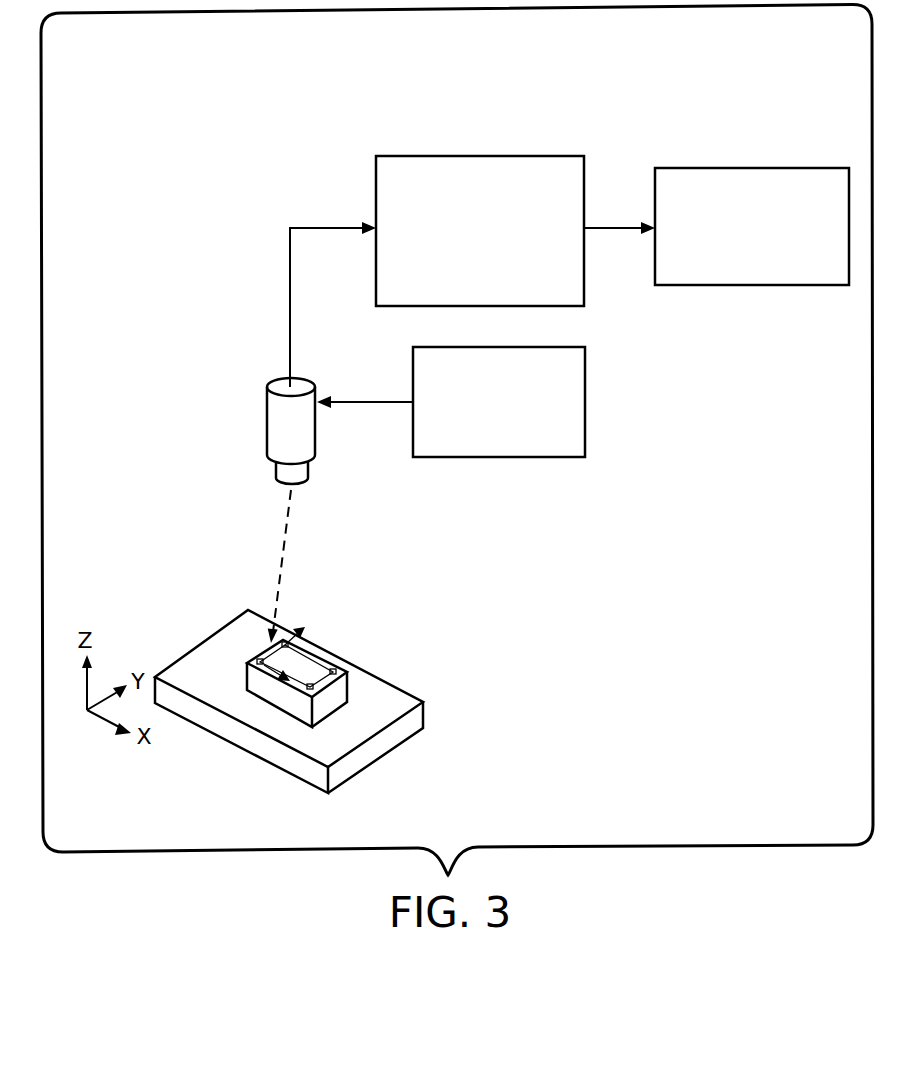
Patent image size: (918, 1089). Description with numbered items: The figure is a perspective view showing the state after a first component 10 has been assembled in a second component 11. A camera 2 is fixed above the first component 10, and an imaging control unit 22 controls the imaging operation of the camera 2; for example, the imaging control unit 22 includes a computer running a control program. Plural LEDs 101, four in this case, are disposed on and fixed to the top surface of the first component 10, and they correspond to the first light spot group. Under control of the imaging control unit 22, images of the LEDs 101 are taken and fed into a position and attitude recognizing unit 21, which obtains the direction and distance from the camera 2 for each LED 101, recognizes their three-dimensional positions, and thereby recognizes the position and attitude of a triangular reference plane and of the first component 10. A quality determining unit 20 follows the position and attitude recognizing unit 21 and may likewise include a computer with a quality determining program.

The camera 2 is at (284, 443).
The first component 10 is at (337, 697).
The second component 11 is at (378, 745).
The quality determining unit 20 is at (693, 168).
The position and attitude recognizing unit 21 is at (513, 155).
The imaging control unit 22 is at (587, 382).
The LEDs 101 is at (263, 662).